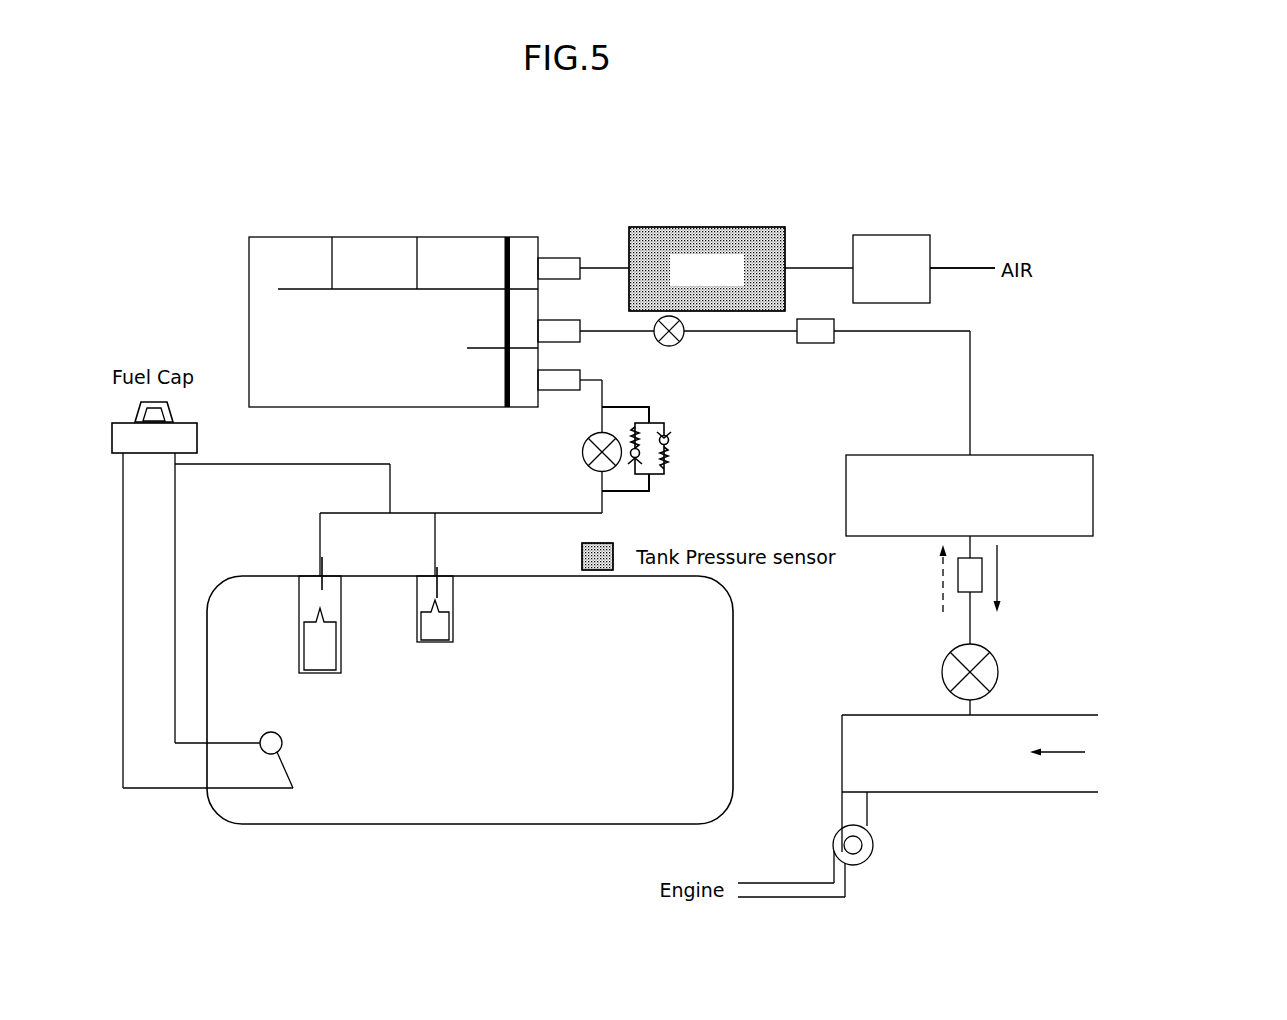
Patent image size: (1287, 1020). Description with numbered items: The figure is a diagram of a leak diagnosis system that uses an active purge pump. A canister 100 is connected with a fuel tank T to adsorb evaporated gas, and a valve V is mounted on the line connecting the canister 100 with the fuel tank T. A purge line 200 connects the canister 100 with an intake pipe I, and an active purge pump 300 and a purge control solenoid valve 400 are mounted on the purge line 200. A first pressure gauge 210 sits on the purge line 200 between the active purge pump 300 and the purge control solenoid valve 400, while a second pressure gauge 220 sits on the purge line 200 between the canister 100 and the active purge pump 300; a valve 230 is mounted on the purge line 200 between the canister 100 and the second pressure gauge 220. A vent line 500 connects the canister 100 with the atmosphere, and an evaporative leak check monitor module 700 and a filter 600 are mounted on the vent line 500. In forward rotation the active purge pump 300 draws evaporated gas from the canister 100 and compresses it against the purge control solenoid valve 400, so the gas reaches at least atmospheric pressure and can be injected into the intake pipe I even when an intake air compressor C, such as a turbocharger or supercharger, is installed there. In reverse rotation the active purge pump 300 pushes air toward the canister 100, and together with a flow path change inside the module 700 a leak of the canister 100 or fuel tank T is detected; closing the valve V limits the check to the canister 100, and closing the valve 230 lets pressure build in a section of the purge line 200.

The canister 100 is at (294, 237).
The purge line 200 is at (972, 390).
The first pressure gauge 210 is at (982, 573).
The second pressure gauge 220 is at (816, 343).
The valve 230 is at (670, 347).
The active purge pump 300 is at (1093, 496).
The purge control solenoid valve 400 is at (998, 656).
The vent line 500 is at (960, 268).
The filter 600 is at (893, 235).
The evaporative leak check monitor module 700 is at (708, 227).
The valve V is at (580, 452).
The fuel tank T is at (580, 824).
The intake air compressor C is at (874, 843).
The intake pipe I is at (1047, 792).